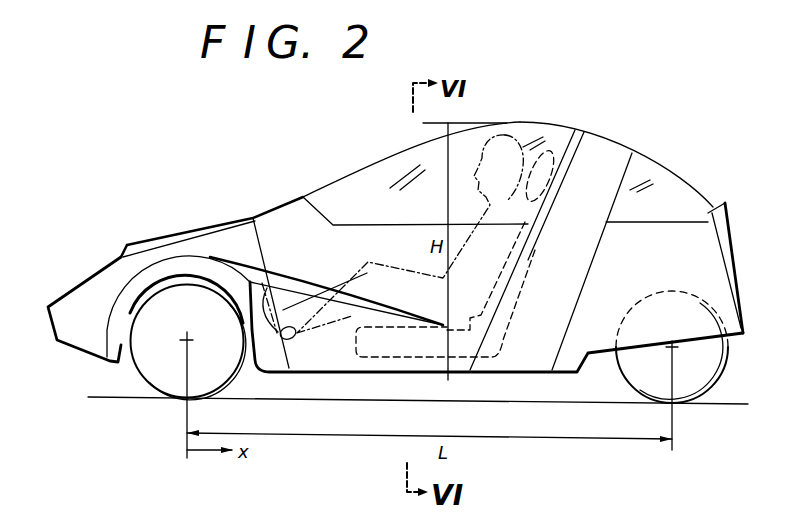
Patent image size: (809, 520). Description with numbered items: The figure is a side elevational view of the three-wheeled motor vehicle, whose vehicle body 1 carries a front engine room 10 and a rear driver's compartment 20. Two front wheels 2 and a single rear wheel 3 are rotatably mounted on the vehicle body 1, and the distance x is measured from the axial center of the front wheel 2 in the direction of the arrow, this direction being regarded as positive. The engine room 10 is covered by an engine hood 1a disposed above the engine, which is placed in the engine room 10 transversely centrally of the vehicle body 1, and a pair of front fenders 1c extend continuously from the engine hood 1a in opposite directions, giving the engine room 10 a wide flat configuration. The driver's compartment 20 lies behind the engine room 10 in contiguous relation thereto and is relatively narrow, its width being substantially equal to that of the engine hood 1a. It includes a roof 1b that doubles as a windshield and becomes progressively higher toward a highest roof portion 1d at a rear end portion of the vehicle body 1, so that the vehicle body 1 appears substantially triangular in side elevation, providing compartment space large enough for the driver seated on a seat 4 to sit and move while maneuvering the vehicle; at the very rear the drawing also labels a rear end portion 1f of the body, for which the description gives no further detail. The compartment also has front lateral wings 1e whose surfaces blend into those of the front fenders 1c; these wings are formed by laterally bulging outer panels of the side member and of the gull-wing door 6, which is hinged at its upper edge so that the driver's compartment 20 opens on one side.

The vehicle body 1 is at (305, 176).
The engine hood 1a is at (187, 245).
The roof 1b is at (355, 182).
The front fender 1c is at (130, 285).
The highest roof portion 1d is at (547, 132).
The front lateral wing 1e is at (286, 360).
The rear end portion 1f is at (722, 208).
The front wheel 2 is at (157, 370).
The rear wheel 3 is at (697, 387).
The seat 4 is at (383, 345).
The gull-wing door 6 is at (347, 262).
The engine room 10 is at (217, 220).
The driver's compartment 20 is at (395, 172).